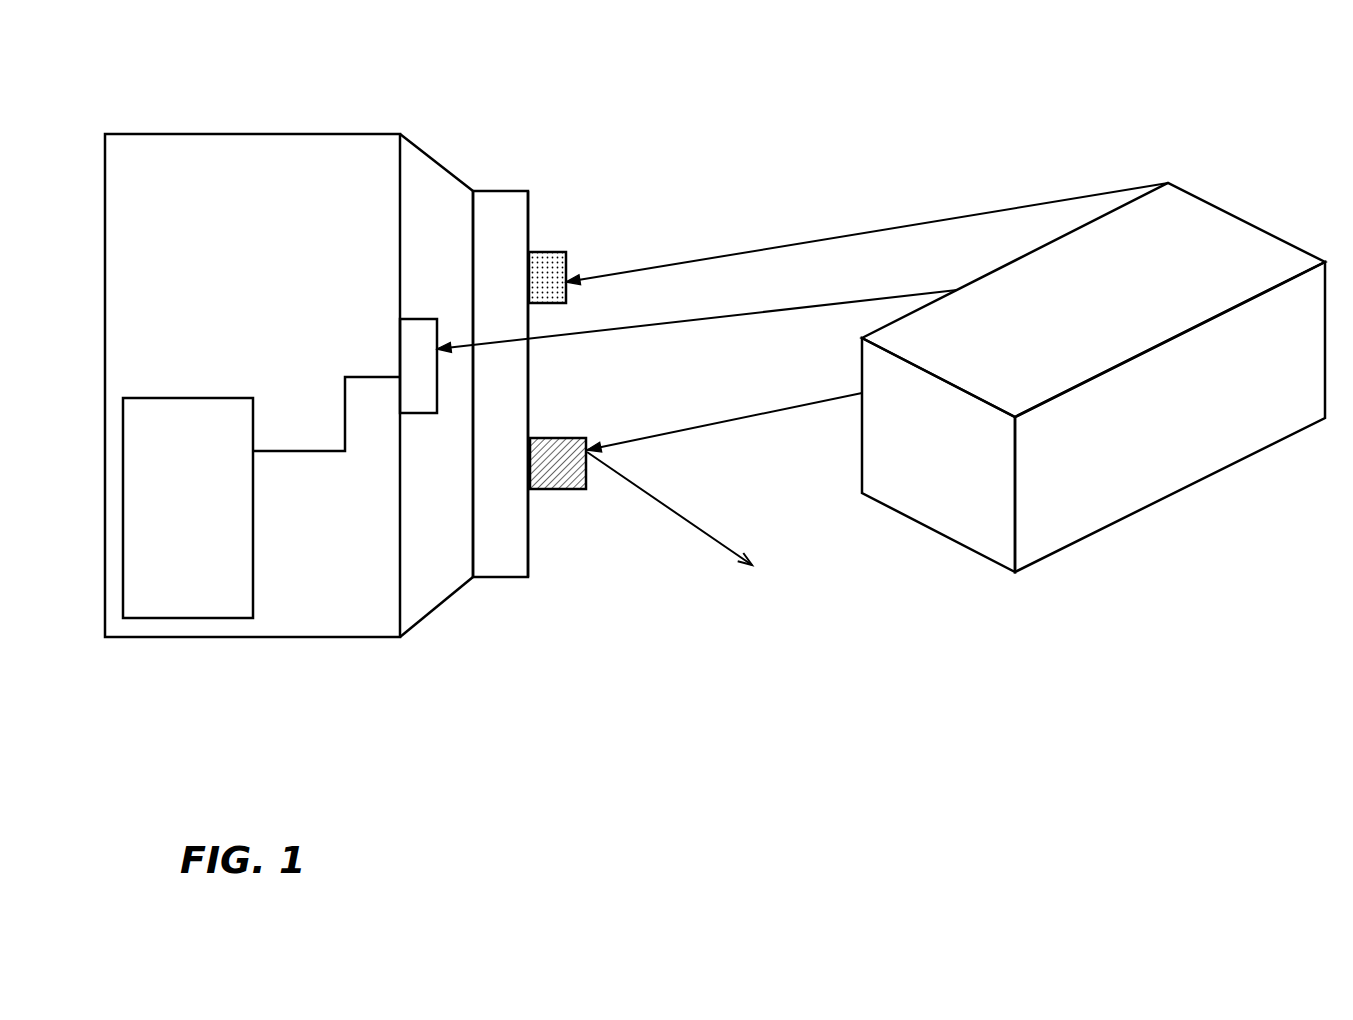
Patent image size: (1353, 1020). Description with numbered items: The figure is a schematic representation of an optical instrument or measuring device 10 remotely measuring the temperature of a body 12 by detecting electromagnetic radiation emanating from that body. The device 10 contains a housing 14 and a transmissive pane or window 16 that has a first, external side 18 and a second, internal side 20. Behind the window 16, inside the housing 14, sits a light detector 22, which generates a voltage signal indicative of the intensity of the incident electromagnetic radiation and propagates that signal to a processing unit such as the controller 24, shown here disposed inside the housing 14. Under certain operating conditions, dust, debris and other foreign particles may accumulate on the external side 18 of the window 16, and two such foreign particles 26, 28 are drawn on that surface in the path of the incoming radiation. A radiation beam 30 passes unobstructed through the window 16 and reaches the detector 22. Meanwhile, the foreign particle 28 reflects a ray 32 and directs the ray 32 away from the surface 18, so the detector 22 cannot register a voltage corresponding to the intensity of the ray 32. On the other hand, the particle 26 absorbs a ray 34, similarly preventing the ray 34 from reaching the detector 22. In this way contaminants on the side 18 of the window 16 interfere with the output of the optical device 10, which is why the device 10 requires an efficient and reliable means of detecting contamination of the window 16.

The optical measuring device 10 is at (418, 78).
The body 12 is at (1193, 190).
The housing 14 is at (272, 134).
The window 16 is at (508, 191).
The first (external) side 18 is at (528, 395).
The second (internal) side 20 is at (473, 471).
The light detector 22 is at (400, 343).
The controller 24 is at (197, 618).
The foreign particle 26 is at (566, 252).
The foreign particle 28 is at (582, 490).
The radiation beam 30 is at (688, 316).
The ray 32 is at (680, 512).
The ray 34 is at (765, 248).